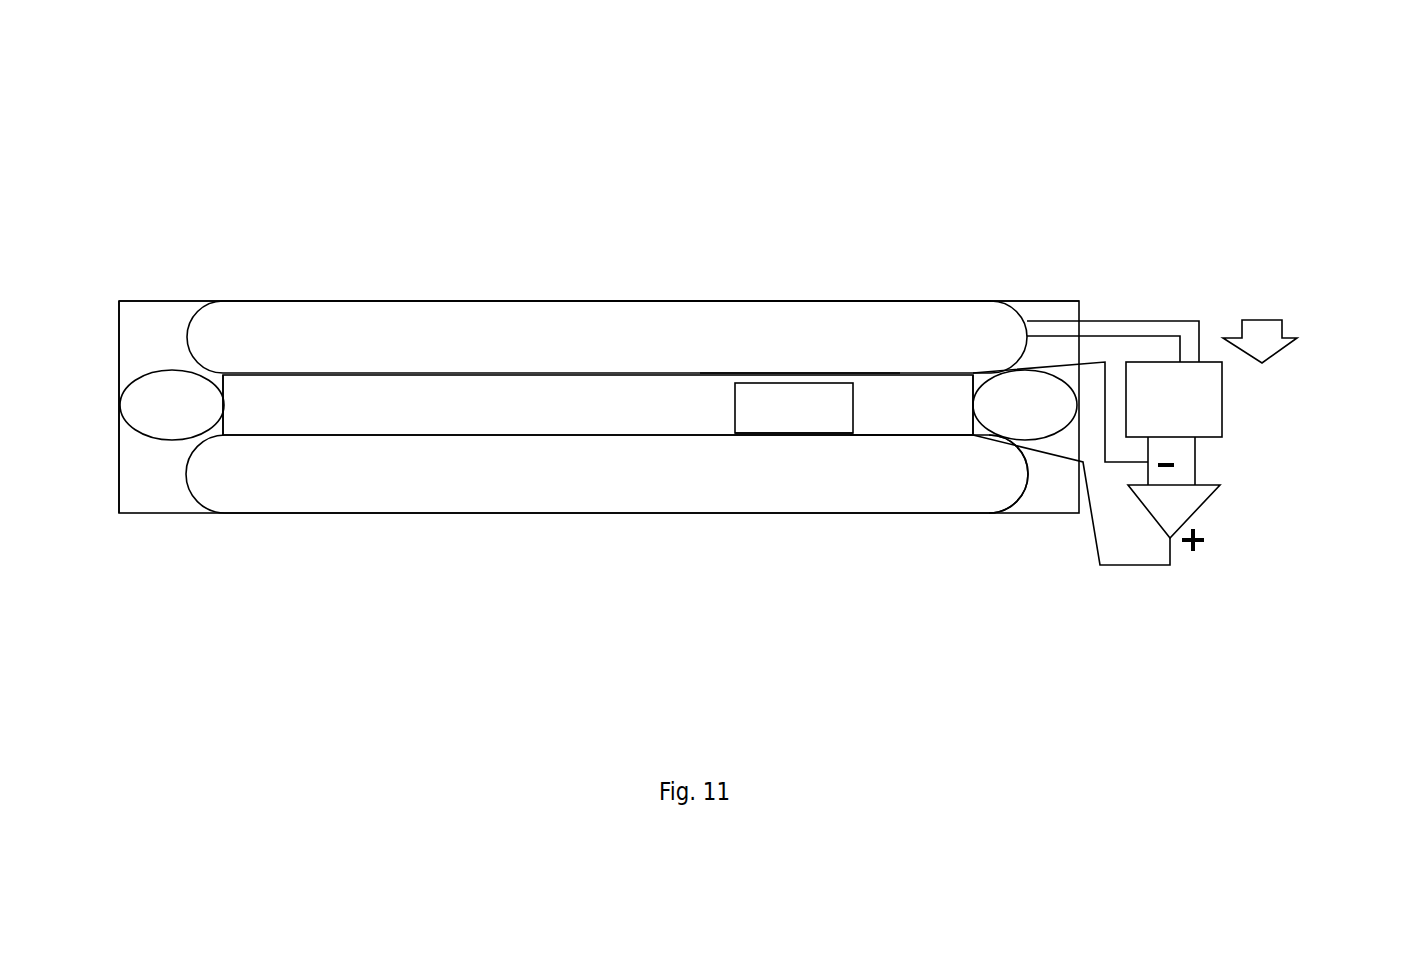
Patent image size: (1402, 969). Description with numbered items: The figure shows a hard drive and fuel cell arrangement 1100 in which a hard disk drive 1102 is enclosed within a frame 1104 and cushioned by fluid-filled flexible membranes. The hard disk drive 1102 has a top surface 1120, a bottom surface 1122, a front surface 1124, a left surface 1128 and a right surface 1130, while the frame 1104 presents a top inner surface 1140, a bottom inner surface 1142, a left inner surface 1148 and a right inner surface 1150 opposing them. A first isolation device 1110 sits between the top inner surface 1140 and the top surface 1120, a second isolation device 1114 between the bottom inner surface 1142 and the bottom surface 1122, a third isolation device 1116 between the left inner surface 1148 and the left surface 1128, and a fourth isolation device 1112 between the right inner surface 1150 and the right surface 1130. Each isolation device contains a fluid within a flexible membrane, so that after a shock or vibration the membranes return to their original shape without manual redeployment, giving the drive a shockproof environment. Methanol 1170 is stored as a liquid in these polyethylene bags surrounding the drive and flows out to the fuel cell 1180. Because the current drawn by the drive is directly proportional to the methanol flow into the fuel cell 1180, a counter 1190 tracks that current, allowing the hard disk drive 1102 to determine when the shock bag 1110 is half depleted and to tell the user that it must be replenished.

The hard drive and fuel cell arrangement 1100 is at (318, 143).
The hard disk drive 1102 is at (598, 485).
The frame 1104 is at (583, 234).
The first isolation device 1110 is at (796, 247).
The fourth isolation device 1112 is at (1048, 498).
The second isolation device 1114 is at (607, 515).
The third isolation device 1116 is at (128, 328).
The top surface 1120 is at (788, 373).
The bottom surface 1122 is at (793, 437).
The front surface 1124 is at (898, 410).
The left surface 1128 is at (227, 387).
The right surface 1130 is at (963, 405).
The top inner surface 1140 is at (1040, 302).
The bottom inner surface 1142 is at (1037, 512).
The left inner surface 1148 is at (119, 465).
The right inner surface 1150 is at (1082, 311).
The methanol 1170 is at (607, 272).
The fuel cell 1180 is at (1222, 413).
The counter 1190 is at (745, 483).